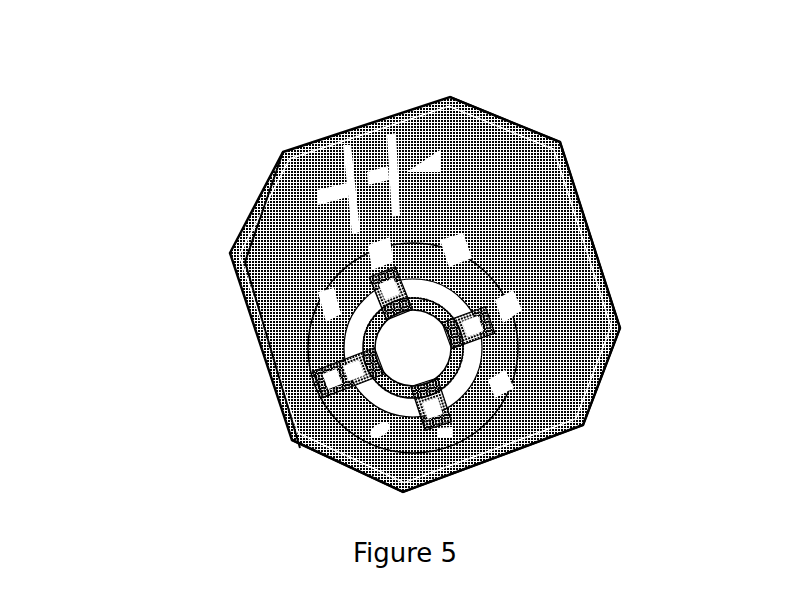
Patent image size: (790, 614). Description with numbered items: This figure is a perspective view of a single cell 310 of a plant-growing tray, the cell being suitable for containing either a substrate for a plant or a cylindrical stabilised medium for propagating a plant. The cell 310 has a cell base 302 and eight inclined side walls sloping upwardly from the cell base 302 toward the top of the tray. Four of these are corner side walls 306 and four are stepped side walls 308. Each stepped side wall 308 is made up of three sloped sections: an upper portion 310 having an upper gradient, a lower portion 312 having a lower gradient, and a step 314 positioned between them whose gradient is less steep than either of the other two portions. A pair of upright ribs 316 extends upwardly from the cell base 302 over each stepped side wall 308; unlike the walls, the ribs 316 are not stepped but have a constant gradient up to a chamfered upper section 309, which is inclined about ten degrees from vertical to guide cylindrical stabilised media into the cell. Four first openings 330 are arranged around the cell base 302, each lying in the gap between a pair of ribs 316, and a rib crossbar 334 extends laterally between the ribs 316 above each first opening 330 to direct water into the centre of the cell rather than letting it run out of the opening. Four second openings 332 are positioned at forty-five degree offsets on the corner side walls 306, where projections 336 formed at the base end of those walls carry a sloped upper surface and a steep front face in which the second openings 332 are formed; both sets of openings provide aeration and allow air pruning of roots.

The cell base 302 is at (387, 445).
The corner side walls 306 is at (508, 158).
The stepped side walls 308 is at (385, 150).
The chamfered upper section 309 is at (262, 333).
The cell 310 is at (375, 296).
The lower portion 312 is at (417, 180).
The step 314 is at (285, 165).
The upright ribs 316 is at (520, 298).
The first openings 330 is at (325, 378).
The second openings 332 is at (460, 250).
The rib crossbar 334 is at (545, 293).
The projections 336 is at (305, 278).